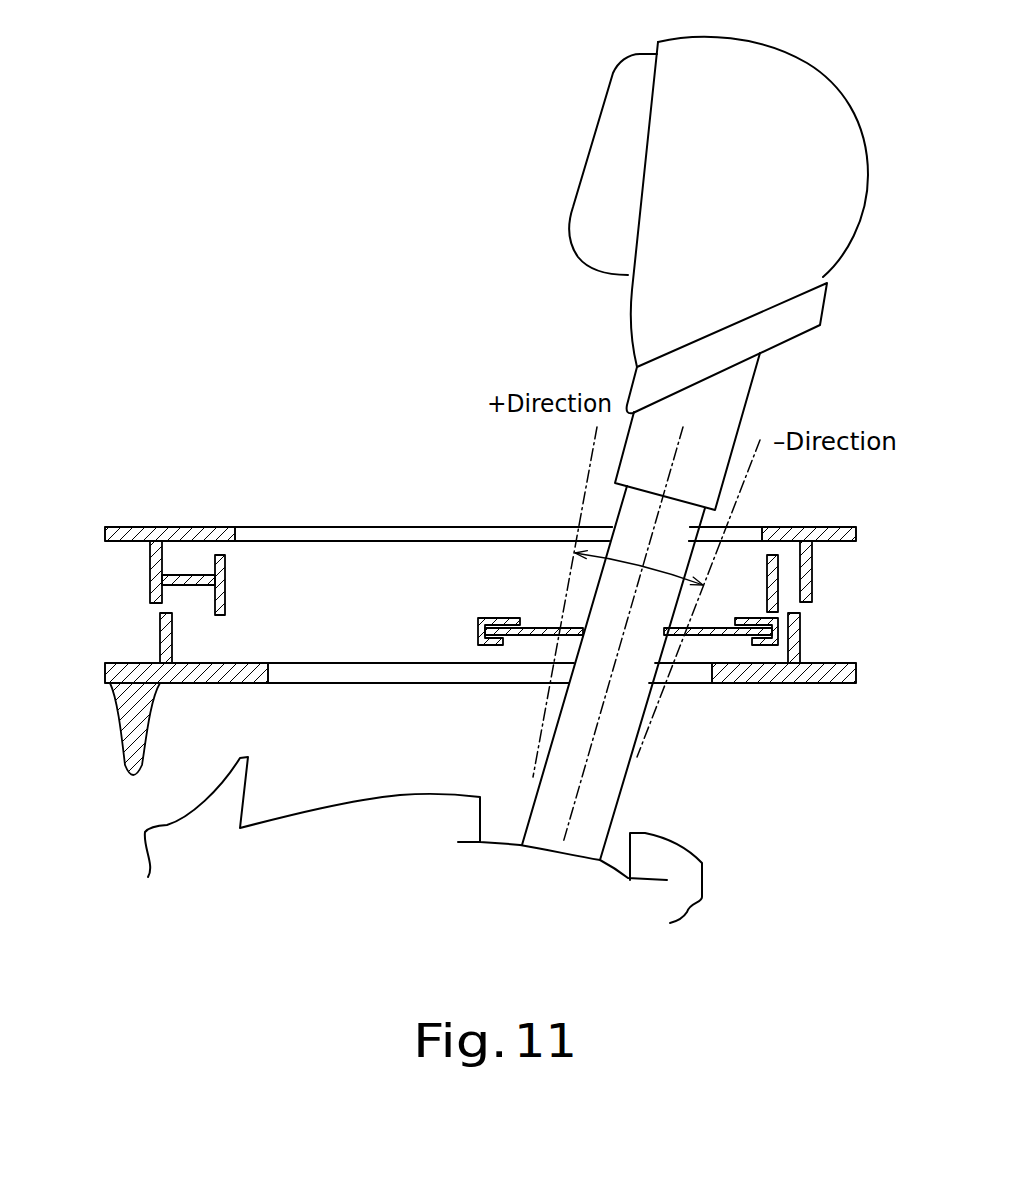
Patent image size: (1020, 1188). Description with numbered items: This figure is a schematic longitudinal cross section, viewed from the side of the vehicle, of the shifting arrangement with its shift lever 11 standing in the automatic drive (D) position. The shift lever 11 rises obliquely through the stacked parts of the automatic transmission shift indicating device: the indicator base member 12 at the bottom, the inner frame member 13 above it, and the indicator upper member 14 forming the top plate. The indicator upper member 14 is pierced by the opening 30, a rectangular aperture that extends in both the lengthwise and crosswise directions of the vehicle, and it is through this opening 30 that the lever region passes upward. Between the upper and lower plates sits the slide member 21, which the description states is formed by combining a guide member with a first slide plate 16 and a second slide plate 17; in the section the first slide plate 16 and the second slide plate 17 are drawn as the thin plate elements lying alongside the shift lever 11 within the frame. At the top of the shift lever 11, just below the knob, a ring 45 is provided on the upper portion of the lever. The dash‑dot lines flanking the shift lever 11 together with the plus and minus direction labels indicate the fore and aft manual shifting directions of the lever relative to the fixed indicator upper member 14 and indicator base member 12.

The shift lever 11 is at (592, 793).
The indicator base member 12 is at (110, 683).
The inner frame member 13 is at (225, 583).
The indicator upper member 14 is at (130, 527).
The first slide plate 16 is at (500, 618).
The second slide plate 17 is at (535, 640).
The slide member 21 is at (555, 605).
The opening 30 is at (368, 537).
The ring 45 is at (763, 335).